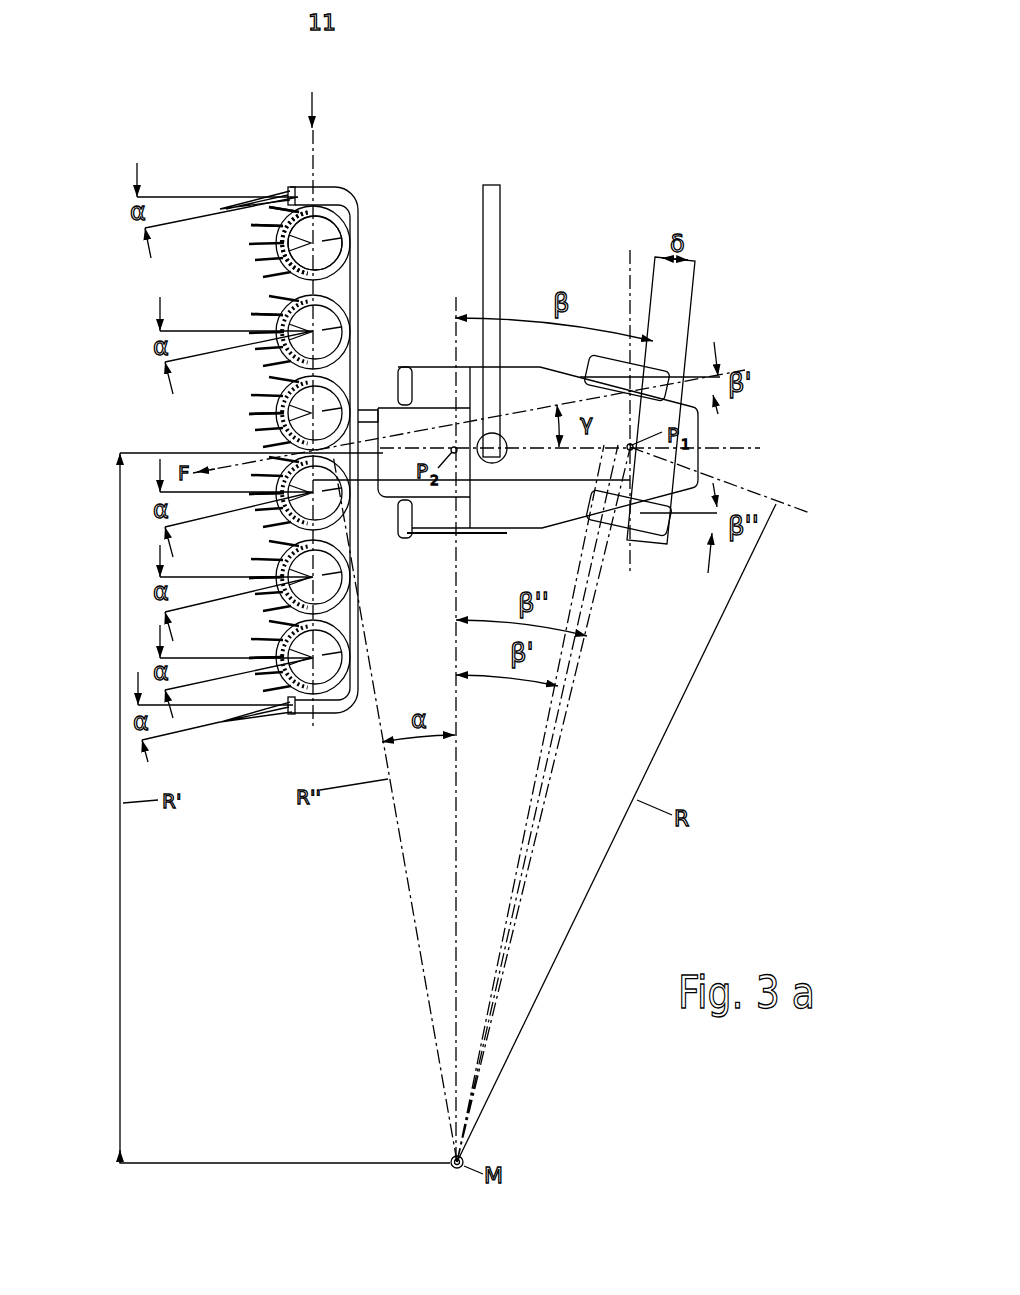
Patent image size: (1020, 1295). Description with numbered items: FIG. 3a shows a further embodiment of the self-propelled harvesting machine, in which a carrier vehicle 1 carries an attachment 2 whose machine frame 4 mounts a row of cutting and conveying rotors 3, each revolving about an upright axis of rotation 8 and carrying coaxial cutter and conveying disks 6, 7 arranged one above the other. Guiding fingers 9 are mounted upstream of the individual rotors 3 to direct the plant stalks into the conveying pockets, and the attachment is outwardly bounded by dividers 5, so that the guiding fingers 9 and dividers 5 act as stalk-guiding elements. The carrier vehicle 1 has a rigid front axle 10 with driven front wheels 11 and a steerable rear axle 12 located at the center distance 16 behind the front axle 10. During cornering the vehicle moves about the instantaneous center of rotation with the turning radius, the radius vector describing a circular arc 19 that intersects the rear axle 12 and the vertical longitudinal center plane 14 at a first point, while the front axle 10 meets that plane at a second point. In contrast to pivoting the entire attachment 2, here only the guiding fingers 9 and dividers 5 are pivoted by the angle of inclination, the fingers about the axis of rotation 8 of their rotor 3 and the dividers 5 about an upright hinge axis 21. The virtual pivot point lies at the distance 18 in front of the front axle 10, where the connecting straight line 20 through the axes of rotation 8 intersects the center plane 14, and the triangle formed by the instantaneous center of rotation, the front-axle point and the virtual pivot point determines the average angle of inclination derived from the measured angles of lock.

The carrier vehicle 1 is at (585, 214).
The attachment 2 is at (312, 97).
The cutting and conveying rotors 3 is at (352, 253).
The machine frame 4 is at (353, 293).
The dividers 5 is at (290, 194).
The cutter disk 6 is at (270, 258).
The conveying disk 7 is at (294, 243).
The axis of rotation 8 is at (280, 266).
The guiding fingers 9 is at (267, 233).
The front axle 10 is at (458, 563).
The front wheels 11 is at (404, 365).
The rear axle 12 is at (633, 573).
The vertical longitudinal center plane 14 is at (758, 444).
The center distance 16 is at (537, 481).
The distance 18 is at (385, 491).
The circular arc 19 is at (778, 490).
The connecting straight line 20 is at (318, 172).
The upright hinge axis 21 is at (288, 186).